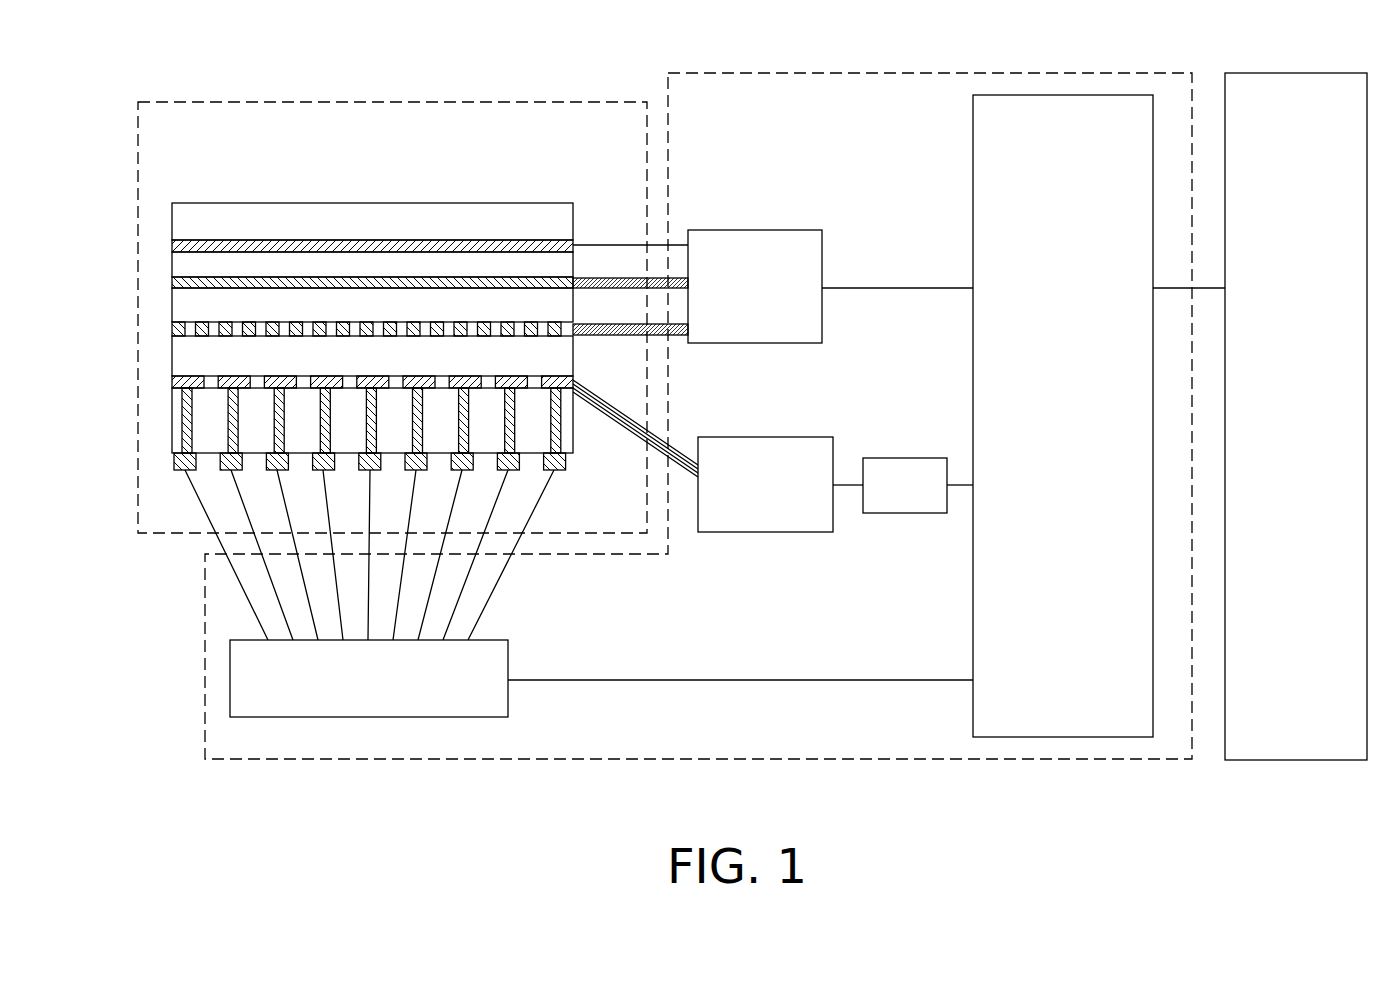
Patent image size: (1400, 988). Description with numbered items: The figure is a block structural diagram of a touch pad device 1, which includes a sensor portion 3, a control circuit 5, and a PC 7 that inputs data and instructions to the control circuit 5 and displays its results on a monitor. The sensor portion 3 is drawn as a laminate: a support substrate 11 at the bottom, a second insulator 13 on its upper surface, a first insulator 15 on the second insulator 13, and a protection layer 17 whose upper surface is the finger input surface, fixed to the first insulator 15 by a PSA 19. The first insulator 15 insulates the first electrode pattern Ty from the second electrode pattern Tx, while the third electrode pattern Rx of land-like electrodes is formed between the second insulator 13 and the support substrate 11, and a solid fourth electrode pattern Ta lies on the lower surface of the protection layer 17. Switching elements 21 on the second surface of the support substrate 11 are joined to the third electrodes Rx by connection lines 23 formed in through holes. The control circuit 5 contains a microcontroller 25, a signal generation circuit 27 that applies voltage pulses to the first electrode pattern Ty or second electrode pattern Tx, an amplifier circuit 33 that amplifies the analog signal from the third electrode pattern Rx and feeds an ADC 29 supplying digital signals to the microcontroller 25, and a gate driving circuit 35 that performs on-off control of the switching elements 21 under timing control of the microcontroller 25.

The touch pad device 1 is at (778, 0).
The sensor portion 3 is at (478, 100).
The control circuit 5 is at (868, 72).
The PC 7 is at (1325, 73).
The microcontroller 25 is at (1083, 95).
The signal generation circuit 27 is at (782, 230).
The analog-to-digital converter (ADC) 29 is at (918, 458).
The amplifier circuit 33 is at (803, 437).
The gate driving circuit 35 is at (508, 655).
The protection layer 17 is at (556, 210).
The PSA 19 is at (575, 265).
The first insulator 15 is at (575, 312).
The second insulator 13 is at (573, 360).
The support substrate 11 is at (578, 420).
The switching element 21 is at (515, 470).
The connection line 23 is at (185, 425).
The fourth electrode pattern Ta is at (202, 240).
The first electrode pattern Ty is at (202, 277).
The second electrode pattern Tx is at (202, 322).
The third electrode pattern Rx is at (190, 378).